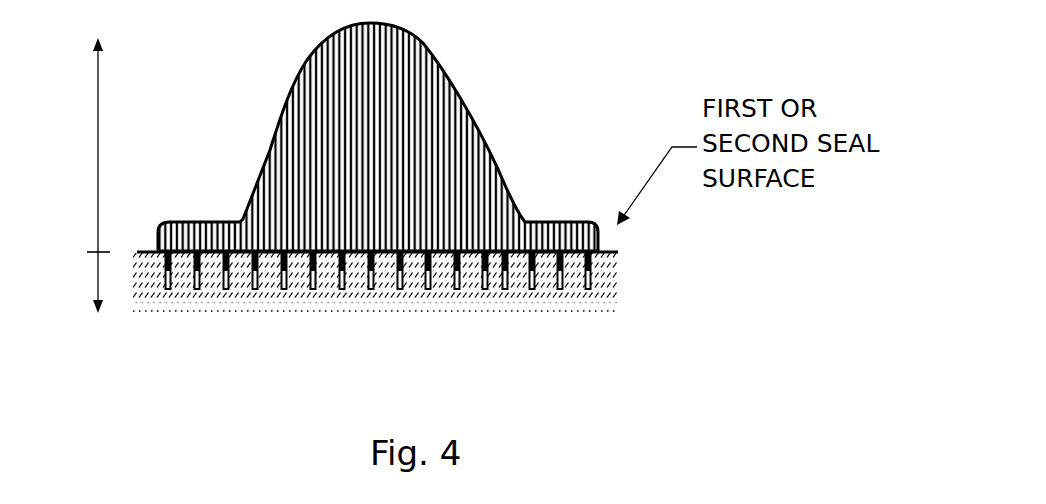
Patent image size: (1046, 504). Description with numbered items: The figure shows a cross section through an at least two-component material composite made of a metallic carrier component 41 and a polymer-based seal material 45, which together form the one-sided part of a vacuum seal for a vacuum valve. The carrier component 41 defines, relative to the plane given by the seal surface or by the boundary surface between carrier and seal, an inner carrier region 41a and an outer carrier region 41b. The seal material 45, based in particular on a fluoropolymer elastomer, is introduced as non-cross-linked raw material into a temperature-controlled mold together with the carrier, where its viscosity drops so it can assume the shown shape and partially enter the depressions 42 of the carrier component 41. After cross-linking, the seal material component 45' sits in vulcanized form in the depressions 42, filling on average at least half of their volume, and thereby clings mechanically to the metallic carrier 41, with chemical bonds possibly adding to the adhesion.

The carrier component 41 is at (410, 287).
The inner carrier region 41a is at (60, 282).
The outer carrier region 41b is at (63, 145).
The depressions 42 is at (378, 297).
The seal material 45 is at (378, 137).
The seal material component 45' is at (433, 263).